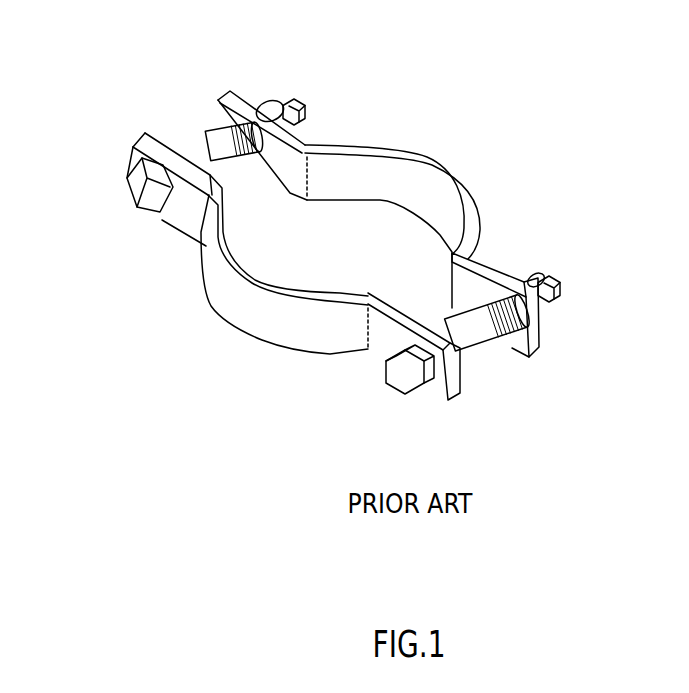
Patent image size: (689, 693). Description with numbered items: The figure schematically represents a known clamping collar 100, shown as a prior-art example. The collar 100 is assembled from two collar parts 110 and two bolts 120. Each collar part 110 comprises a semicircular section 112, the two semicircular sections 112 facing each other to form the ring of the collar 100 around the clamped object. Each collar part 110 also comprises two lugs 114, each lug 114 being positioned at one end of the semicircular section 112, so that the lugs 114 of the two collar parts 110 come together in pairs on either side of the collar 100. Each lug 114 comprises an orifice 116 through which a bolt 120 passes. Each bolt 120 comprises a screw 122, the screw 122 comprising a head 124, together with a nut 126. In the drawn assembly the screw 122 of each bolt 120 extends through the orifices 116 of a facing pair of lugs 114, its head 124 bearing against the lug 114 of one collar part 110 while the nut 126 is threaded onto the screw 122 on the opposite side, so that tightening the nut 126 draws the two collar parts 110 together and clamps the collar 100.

The clamping collar 100 is at (200, 353).
The collar part 110 is at (473, 207).
The semicircular section 112 is at (410, 153).
The lug 114 is at (222, 92).
The orifice 116 is at (213, 128).
The bolt 120 is at (291, 98).
The screw 122 is at (212, 160).
The head 124 is at (130, 191).
The nut 126 is at (262, 100).